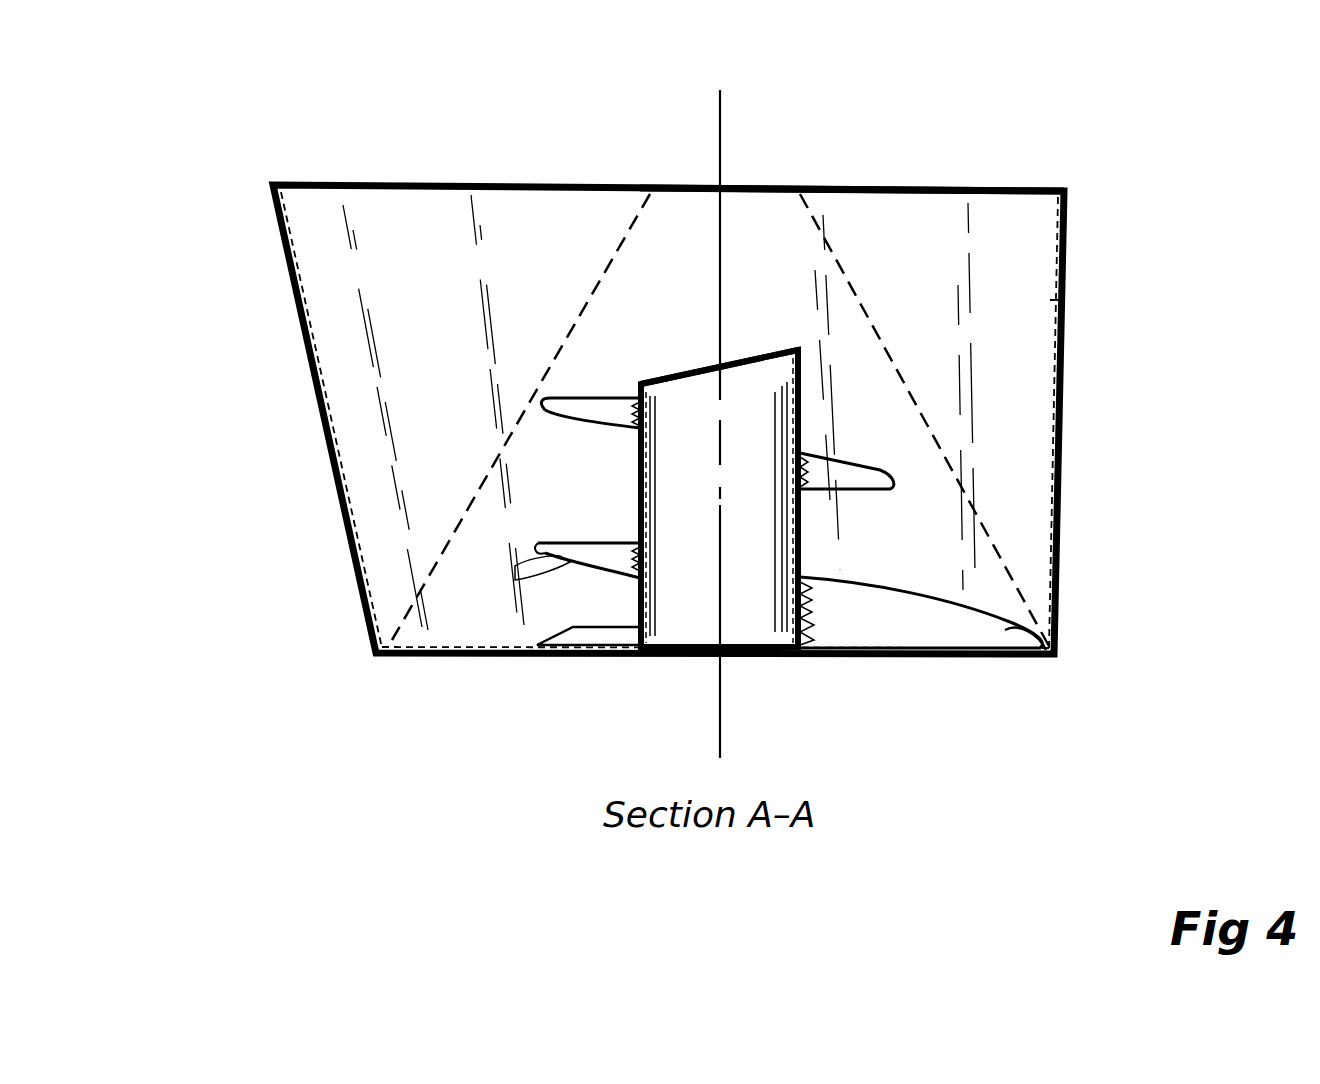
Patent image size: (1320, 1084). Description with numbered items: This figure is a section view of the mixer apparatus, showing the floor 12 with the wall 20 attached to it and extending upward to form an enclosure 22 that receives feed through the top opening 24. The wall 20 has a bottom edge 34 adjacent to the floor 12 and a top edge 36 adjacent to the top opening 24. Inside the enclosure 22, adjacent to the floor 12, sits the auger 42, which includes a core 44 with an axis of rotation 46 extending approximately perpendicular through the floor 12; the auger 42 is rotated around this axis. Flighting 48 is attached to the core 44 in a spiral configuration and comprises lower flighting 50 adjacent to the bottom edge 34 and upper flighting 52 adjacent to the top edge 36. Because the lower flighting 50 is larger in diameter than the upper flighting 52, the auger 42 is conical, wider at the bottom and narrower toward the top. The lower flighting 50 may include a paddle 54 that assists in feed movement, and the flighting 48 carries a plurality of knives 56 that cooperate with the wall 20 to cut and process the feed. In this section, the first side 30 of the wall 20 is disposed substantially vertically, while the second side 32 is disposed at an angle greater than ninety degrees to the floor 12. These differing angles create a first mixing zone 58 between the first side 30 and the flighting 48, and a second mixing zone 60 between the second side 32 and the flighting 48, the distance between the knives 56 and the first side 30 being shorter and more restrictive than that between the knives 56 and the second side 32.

The floor 12 is at (404, 658).
The wall 20 is at (1070, 227).
The enclosure 22 is at (1040, 302).
The top opening 24 is at (965, 188).
The first side 30 is at (990, 380).
The second side 32 is at (315, 312).
The bottom edge 34 is at (493, 658).
The top edge 36 is at (855, 188).
The auger 42 is at (676, 498).
The core 44 is at (697, 390).
The axis of rotation 46 is at (733, 102).
The flighting 48 is at (940, 613).
The lower flighting 50 is at (1000, 633).
The upper flighting 52 is at (867, 473).
The paddle 54 is at (603, 640).
The knives 56 is at (522, 568).
The first mixing zone 58 is at (985, 252).
The second mixing zone 60 is at (380, 248).